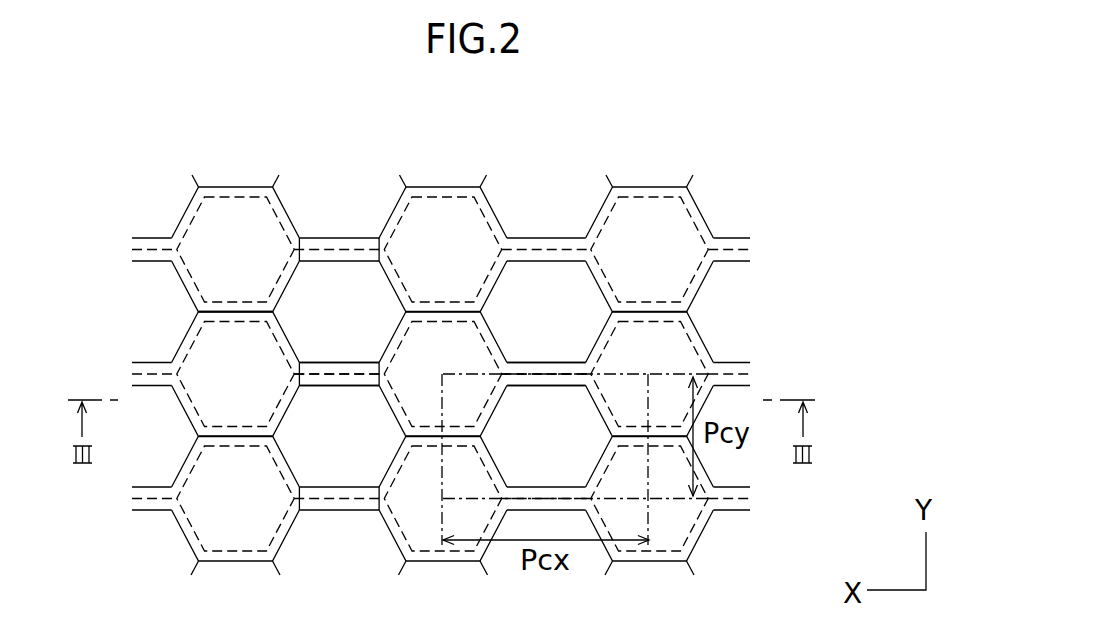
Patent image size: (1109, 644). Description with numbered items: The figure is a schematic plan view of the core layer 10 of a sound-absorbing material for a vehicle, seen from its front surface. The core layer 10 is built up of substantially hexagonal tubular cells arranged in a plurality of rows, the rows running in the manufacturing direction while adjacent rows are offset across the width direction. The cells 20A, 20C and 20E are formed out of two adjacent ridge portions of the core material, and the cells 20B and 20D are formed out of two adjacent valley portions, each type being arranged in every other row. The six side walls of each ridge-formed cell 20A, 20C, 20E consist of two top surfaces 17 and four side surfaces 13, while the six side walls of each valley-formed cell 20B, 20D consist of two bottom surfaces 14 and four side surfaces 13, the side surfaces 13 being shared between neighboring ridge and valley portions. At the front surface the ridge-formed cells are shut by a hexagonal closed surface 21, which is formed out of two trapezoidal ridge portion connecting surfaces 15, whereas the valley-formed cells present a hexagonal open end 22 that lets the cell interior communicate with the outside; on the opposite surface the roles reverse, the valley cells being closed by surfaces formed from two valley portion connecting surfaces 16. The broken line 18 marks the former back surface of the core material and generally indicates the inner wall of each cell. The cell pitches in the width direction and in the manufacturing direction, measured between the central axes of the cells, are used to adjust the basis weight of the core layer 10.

The core layer 10 is at (778, 190).
The side surface 13 is at (294, 266).
The bottom surface 14 is at (352, 261).
The ridge portion connecting surface 15 is at (235, 213).
The valley portion connecting surface 16 is at (333, 300).
The top surface 17 is at (200, 312).
The broken line 18 is at (650, 195).
The cell 20A is at (225, 507).
The cell 20B is at (303, 433).
The cell 20C is at (443, 233).
The cell 20D is at (548, 297).
The cell 20E is at (658, 250).
The closed surface 21 is at (663, 518).
The open end 22 is at (548, 418).